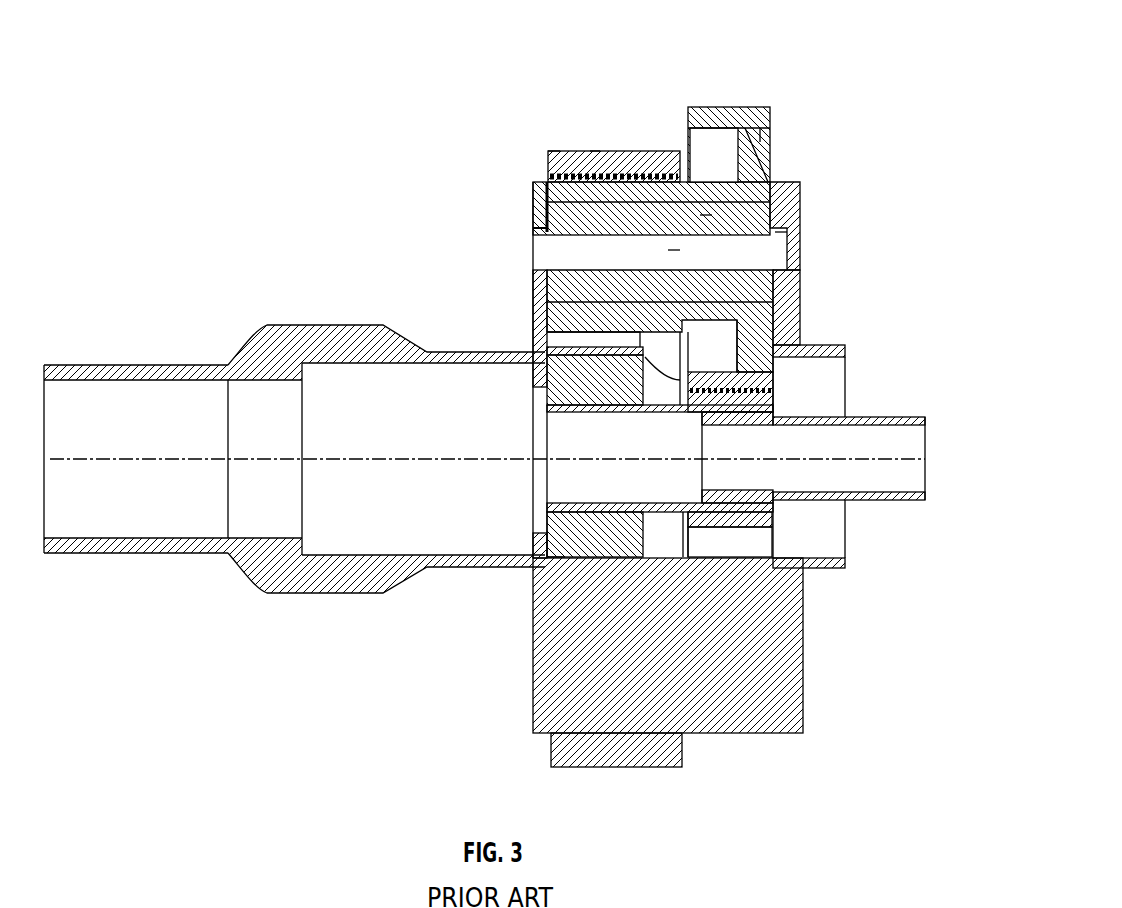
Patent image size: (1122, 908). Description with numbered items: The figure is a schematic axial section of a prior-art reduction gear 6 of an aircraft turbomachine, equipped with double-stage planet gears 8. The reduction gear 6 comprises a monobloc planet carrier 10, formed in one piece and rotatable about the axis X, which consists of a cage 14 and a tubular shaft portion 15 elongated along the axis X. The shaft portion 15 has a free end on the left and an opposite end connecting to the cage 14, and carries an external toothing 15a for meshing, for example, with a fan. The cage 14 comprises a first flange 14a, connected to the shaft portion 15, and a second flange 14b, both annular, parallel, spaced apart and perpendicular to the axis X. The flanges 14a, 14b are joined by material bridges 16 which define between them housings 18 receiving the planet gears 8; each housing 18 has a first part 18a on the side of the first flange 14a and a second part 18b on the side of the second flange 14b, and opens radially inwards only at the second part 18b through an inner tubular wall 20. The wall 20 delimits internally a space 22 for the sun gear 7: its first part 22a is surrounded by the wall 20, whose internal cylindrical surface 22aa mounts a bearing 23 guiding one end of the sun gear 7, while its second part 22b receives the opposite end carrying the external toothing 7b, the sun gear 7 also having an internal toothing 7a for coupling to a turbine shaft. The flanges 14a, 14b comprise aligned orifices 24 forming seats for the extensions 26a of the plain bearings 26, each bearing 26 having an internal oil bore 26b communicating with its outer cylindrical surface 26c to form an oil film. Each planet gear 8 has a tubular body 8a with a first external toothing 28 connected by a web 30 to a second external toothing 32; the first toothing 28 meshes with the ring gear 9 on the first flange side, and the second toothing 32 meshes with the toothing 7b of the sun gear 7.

The reduction gear 6 is at (890, 80).
The sun gear 7 is at (762, 544).
The internal toothing 7a is at (760, 430).
The external toothing 7b is at (760, 516).
The planet gear 8 is at (752, 100).
The tubular body 8a is at (540, 183).
The ring gear 9 is at (553, 152).
The planet carrier 10 is at (808, 200).
The cage 14 is at (788, 723).
The first flange 14a is at (533, 210).
The second flange 14b is at (803, 307).
The shaft portion 15 is at (162, 553).
The external toothing 15a is at (360, 593).
The material bridges 16 is at (698, 705).
The housings 18 is at (633, 335).
The first part of housing 18a is at (552, 173).
The second part of housing 18b is at (780, 248).
The inner tubular wall 20 is at (583, 343).
The space 22 is at (520, 545).
The first part of space 22a is at (617, 444).
The clamping ring edge 22aa is at (580, 350).
The second part of space 22b is at (725, 548).
The bearing 23 is at (540, 635).
The orifices 24 is at (537, 230).
The plain bearing 26 is at (745, 212).
The extensions 26a is at (533, 268).
The internal bore 26b is at (704, 215).
The outer cylindrical surface 26c is at (673, 252).
The first external toothing 28 is at (596, 152).
The web 30 is at (768, 134).
The second external toothing 32 is at (771, 112).
The axis X is at (905, 458).